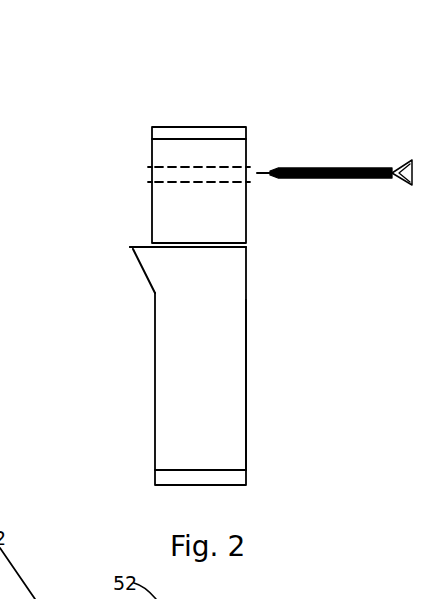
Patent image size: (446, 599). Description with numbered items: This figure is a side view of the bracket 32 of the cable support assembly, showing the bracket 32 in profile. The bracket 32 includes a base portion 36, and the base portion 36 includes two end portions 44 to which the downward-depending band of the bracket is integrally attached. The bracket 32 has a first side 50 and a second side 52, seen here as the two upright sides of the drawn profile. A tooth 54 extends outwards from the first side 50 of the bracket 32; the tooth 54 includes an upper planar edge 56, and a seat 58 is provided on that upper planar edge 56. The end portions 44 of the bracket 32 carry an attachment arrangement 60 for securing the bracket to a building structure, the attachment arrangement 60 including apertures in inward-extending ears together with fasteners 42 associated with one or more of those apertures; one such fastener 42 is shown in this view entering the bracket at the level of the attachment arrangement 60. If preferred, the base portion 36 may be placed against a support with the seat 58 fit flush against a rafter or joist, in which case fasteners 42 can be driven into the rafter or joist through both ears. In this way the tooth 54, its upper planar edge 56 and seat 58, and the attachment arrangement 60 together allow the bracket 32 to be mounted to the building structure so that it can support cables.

The bracket 32 is at (127, 106).
The base portion 36 is at (197, 127).
The fasteners 42 is at (346, 178).
The end portions 44 is at (212, 219).
The first side 50 is at (152, 380).
The second side 52 is at (249, 377).
The tooth 54 is at (138, 273).
The upper planar edge 56 is at (135, 245).
The seat 58 is at (137, 228).
The attachment arrangement 60 is at (247, 170).